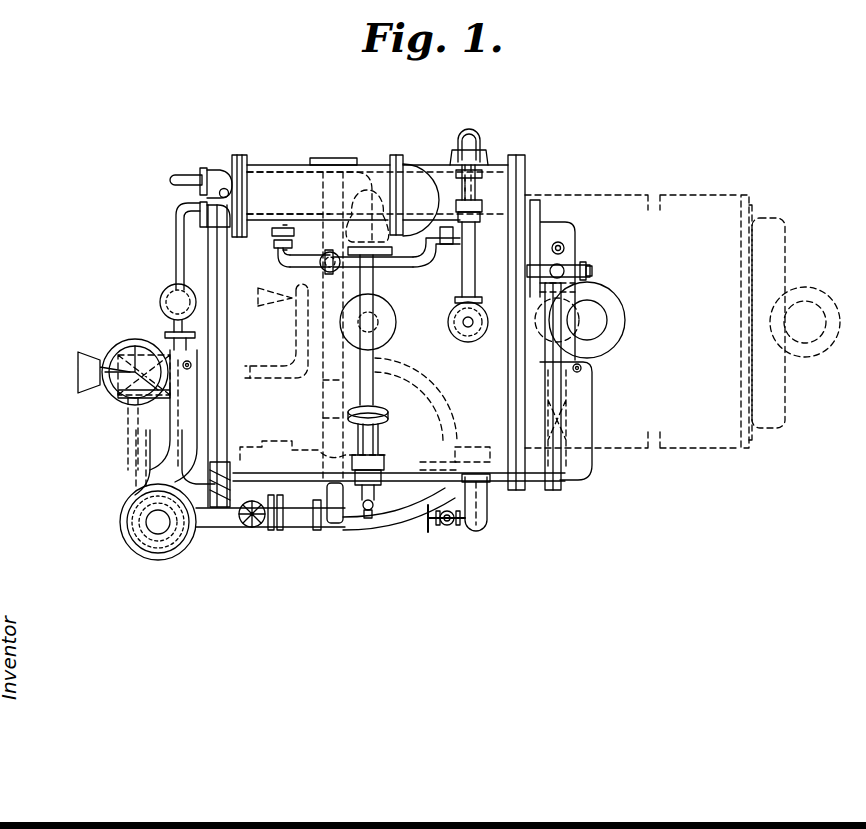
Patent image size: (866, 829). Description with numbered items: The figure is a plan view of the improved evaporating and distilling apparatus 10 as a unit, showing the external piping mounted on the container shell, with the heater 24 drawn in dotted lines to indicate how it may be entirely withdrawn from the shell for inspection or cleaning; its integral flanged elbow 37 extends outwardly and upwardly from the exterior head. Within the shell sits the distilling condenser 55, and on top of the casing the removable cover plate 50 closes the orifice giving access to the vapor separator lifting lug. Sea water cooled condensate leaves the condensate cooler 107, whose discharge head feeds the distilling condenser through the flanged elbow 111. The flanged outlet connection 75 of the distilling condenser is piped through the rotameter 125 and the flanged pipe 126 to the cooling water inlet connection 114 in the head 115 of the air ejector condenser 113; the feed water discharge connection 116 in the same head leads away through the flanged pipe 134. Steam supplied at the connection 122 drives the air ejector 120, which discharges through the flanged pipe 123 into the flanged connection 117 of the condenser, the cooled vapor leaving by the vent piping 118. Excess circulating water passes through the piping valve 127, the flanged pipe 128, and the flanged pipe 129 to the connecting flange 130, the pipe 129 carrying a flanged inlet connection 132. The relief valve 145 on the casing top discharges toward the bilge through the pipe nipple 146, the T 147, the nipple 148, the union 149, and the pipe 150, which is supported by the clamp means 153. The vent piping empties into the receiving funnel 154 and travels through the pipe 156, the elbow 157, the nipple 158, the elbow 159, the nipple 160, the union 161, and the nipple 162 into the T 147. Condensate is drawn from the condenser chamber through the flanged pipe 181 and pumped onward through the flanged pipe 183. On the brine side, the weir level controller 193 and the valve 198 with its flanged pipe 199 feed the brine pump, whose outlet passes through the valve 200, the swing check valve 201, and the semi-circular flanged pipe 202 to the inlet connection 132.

The evaporating and distilling apparatus 10 is at (316, 126).
The heater 24 is at (576, 229).
The flanged elbow 37 is at (612, 338).
The cover plate 50 is at (397, 327).
The distilling condenser 55 is at (588, 462).
The flanged outlet connection 75 is at (171, 336).
The condensate cooler 107 is at (120, 512).
The flanged elbow 111 is at (157, 528).
The air ejector condenser 113 is at (277, 188).
The cooling water inlet connection 114 is at (222, 226).
The head 115 is at (239, 155).
The feed water discharge connection 116 is at (215, 174).
The flanged connection 117 is at (385, 249).
The vent piping 118 is at (297, 262).
The air ejector 120 is at (374, 438).
The steam connection 122 is at (371, 515).
The flanged pipe 123 is at (374, 387).
The rotameter 125 is at (163, 289).
The flanged pipe 126 is at (176, 240).
The piping valve 127 is at (78, 374).
The flanged pipe 128 is at (220, 530).
The flanged pipe 129 is at (326, 418).
The connecting flange 130 is at (336, 161).
The flanged inlet connection 132 is at (337, 376).
The flanged pipe 134 is at (175, 181).
The relief valve 145 is at (467, 341).
The pipe nipple 146 is at (471, 286).
The T 147 is at (472, 240).
The nipple 148 is at (478, 208).
The union 149 is at (482, 201).
The pipe 150 is at (476, 176).
The clamp means 153 is at (487, 155).
The receiving funnel 154 is at (318, 262).
The pipe 156 is at (400, 268).
The elbow 157 is at (413, 276).
The nipple 158 is at (424, 254).
The elbow 159 is at (417, 220).
The nipple 160 is at (418, 200).
The union 161 is at (455, 236).
The nipple 162 is at (455, 200).
The flanged pipe 181 is at (493, 502).
The flanged pipe 183 is at (452, 478).
The weir level controller 193 is at (126, 344).
The valve 198 is at (292, 306).
The flanged pipe 199 is at (291, 336).
The valve 200 is at (257, 530).
The swing check valve 201 is at (312, 530).
The semi-circular flanged pipe 202 is at (453, 414).